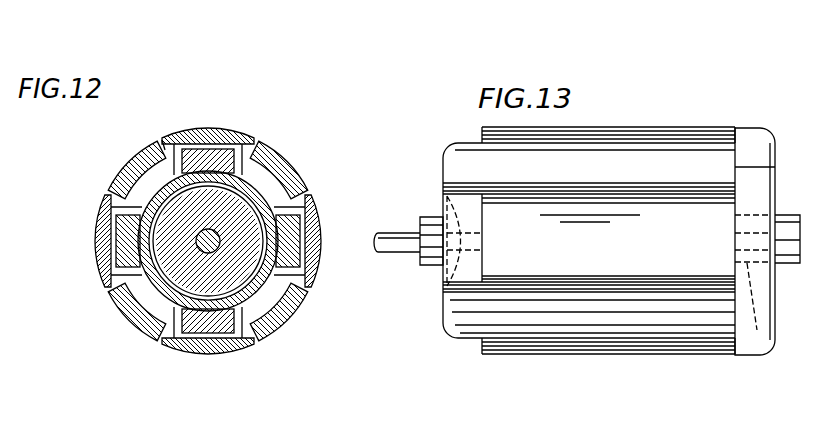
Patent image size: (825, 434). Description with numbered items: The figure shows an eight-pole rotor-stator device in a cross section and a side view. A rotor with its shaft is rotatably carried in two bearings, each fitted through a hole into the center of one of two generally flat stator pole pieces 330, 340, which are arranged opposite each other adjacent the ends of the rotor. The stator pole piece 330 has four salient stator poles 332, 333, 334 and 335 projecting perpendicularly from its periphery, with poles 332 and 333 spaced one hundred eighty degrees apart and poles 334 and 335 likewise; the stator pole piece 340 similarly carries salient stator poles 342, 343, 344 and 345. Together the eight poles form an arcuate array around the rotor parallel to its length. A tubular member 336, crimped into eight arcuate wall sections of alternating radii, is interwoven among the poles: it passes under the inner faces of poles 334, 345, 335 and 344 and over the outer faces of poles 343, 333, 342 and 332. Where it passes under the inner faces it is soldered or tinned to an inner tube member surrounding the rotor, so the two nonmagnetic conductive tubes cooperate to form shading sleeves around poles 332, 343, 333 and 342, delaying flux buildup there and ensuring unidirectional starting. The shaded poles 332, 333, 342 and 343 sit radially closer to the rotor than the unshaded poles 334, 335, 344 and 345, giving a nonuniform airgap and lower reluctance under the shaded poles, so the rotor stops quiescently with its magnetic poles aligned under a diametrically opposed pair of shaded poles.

In FIG. 13, the stator pole piece 330 is at (463, 340).
In FIG. 12, the salient stator pole 332 is at (228, 133).
In FIG. 12, the salient stator pole 333 is at (183, 350).
In FIG. 12, the salient stator pole 334 is at (280, 184).
In FIG. 12, the salient stator pole 335 is at (122, 322).
In FIG. 12, the tubular member 336 is at (203, 128).
In FIG. 13, the tubular member 336 is at (660, 127).
In FIG. 13, the stator pole piece 340 is at (755, 128).
In FIG. 12, the salient stator pole 342 is at (117, 225).
In FIG. 12, the salient stator pole 343 is at (320, 228).
In FIG. 12, the salient stator pole 344 is at (118, 148).
In FIG. 12, the salient stator pole 345 is at (293, 317).